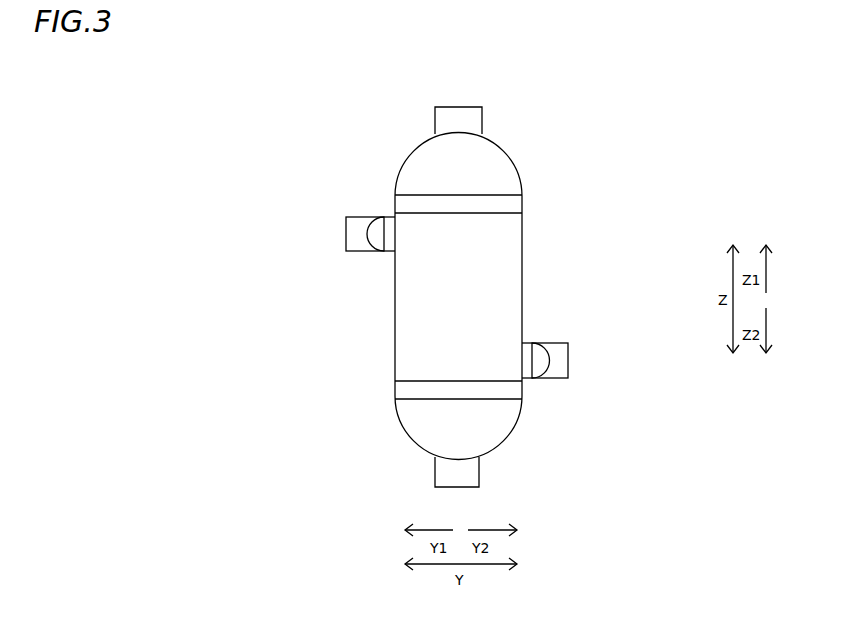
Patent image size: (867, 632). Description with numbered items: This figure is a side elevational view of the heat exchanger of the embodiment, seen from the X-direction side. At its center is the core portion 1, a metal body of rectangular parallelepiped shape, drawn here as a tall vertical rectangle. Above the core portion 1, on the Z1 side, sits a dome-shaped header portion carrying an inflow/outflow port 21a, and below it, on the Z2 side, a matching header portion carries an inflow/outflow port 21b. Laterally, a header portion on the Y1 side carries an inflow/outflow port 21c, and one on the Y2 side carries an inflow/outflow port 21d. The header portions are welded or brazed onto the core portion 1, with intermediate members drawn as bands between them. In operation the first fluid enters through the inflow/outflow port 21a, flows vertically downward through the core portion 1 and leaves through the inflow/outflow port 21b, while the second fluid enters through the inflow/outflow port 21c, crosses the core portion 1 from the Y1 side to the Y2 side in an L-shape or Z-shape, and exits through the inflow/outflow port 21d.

The core portion 1 is at (507, 283).
The inflow/outflow port 21a is at (457, 115).
The inflow/outflow port 21b is at (471, 470).
The inflow/outflow port 21c is at (346, 236).
The inflow/outflow port 21d is at (568, 360).